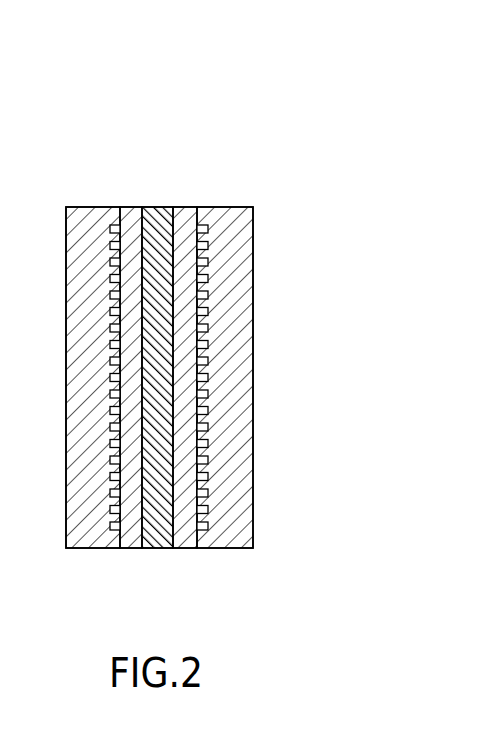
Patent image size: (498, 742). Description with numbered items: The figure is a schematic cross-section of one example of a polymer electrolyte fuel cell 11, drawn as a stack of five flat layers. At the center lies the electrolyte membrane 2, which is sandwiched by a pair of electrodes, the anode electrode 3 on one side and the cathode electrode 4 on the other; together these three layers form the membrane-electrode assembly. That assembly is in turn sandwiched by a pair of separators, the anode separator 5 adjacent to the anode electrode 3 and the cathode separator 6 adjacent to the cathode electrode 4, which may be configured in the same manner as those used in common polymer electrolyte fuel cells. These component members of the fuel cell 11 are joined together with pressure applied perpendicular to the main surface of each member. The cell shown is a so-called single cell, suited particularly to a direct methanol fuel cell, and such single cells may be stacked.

The polymer electrolyte fuel cell 11 is at (356, 97).
The electrolyte membrane 2 is at (160, 541).
The anode electrode 3 is at (190, 211).
The cathode electrode 4 is at (135, 211).
The anode separator 5 is at (235, 211).
The cathode separator 6 is at (95, 211).